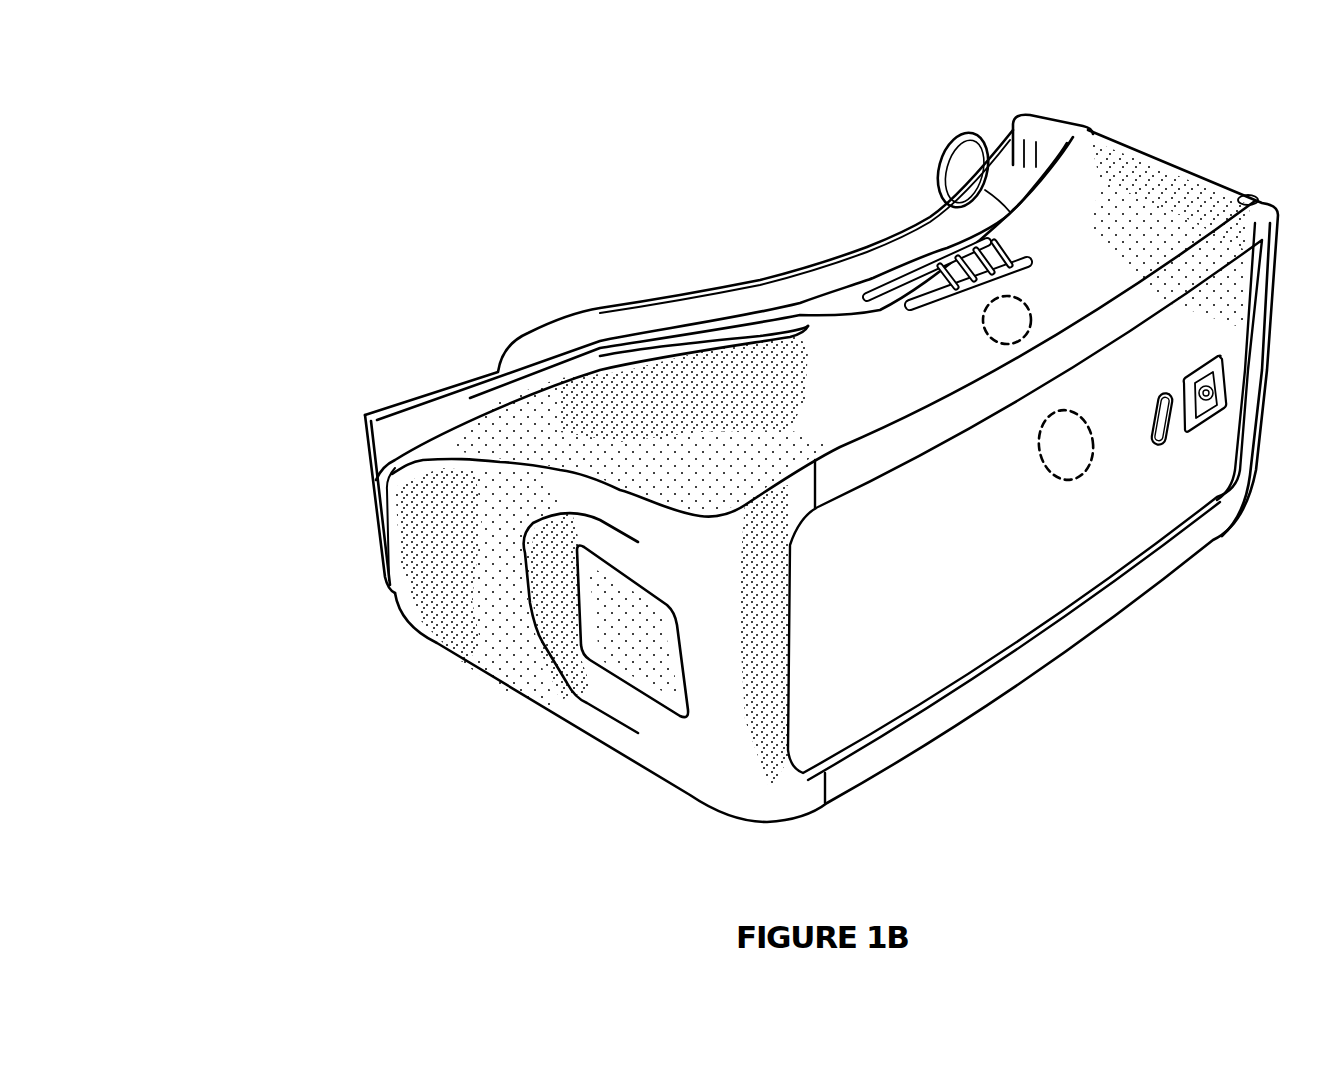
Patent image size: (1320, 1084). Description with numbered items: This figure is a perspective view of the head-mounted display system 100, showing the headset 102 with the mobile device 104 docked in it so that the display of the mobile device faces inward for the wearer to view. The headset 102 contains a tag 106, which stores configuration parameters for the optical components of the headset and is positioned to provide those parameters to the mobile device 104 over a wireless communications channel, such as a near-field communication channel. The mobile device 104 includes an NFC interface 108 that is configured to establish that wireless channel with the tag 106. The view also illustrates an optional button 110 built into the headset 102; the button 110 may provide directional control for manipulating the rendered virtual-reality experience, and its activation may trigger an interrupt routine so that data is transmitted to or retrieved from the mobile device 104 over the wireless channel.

The head-mounted display system 100 is at (166, 110).
The headset 102 is at (1177, 165).
The mobile device 104 is at (1180, 490).
The tag 106 is at (987, 335).
The NFC interface 108 is at (1046, 472).
The button 110 is at (625, 658).